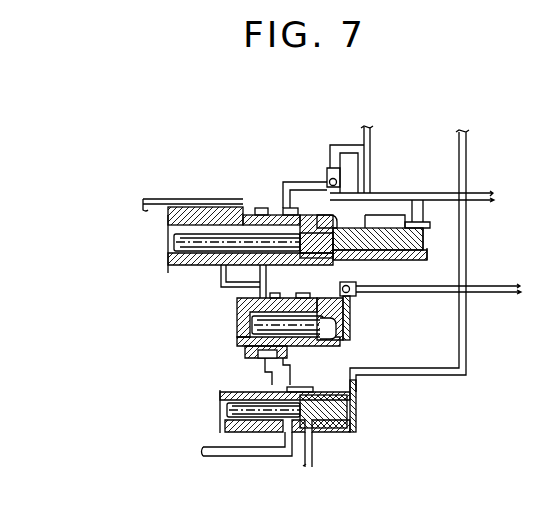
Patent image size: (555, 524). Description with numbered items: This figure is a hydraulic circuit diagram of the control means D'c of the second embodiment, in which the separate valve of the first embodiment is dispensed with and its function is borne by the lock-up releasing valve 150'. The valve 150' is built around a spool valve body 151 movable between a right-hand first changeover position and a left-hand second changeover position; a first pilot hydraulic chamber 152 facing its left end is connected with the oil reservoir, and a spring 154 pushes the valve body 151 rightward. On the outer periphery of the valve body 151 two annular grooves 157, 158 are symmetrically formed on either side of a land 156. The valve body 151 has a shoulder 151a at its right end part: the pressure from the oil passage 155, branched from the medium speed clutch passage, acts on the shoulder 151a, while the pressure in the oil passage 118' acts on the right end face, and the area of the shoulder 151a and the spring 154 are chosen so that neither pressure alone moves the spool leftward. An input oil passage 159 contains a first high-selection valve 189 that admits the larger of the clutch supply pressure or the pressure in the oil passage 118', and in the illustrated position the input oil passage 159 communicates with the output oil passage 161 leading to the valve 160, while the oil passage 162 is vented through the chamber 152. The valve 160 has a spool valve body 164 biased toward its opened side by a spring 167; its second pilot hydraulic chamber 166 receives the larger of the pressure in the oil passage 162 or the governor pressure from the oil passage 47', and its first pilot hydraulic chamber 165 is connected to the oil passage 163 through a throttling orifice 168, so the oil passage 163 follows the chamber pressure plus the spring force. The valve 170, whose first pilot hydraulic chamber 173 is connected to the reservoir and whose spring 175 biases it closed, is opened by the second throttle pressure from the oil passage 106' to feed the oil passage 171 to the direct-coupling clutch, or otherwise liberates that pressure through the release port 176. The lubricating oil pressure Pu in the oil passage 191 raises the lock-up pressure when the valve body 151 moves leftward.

The lock-up releasing valve 150' is at (339, 236).
The first pilot hydraulic chamber 152 is at (165, 229).
The spring 154 is at (180, 246).
The land 156 is at (311, 257).
The annular groove 157 is at (378, 240).
The spool valve body 151 is at (394, 242).
The shoulder 151a is at (358, 211).
The annular groove 158 is at (263, 210).
The input oil passage 159 is at (290, 186).
The first high-selection valve 189 is at (327, 165).
The oil passage 155 is at (371, 148).
The oil passage 118' is at (412, 184).
The oil passage 191 is at (166, 199).
The lubricating oil pressure Pu is at (210, 199).
The oil passage 162 is at (221, 287).
The output oil passage 161 is at (258, 283).
The valve 160 is at (360, 327).
The spool valve body 164 is at (245, 317).
The first pilot hydraulic chamber 165 is at (247, 340).
The oil passage 163 is at (287, 372).
The throttling orifice 168 is at (270, 356).
The spring 167 is at (336, 343).
The second pilot hydraulic chamber 166 is at (344, 310).
The oil passage 47' is at (430, 299).
The oil passage 106' is at (409, 267).
The valve 170 is at (365, 417).
The first pilot hydraulic chamber 173 is at (218, 423).
The spring 175 is at (224, 405).
The oil passage 171 is at (234, 452).
The release port 176 is at (316, 456).
The control means D'c is at (76, 345).